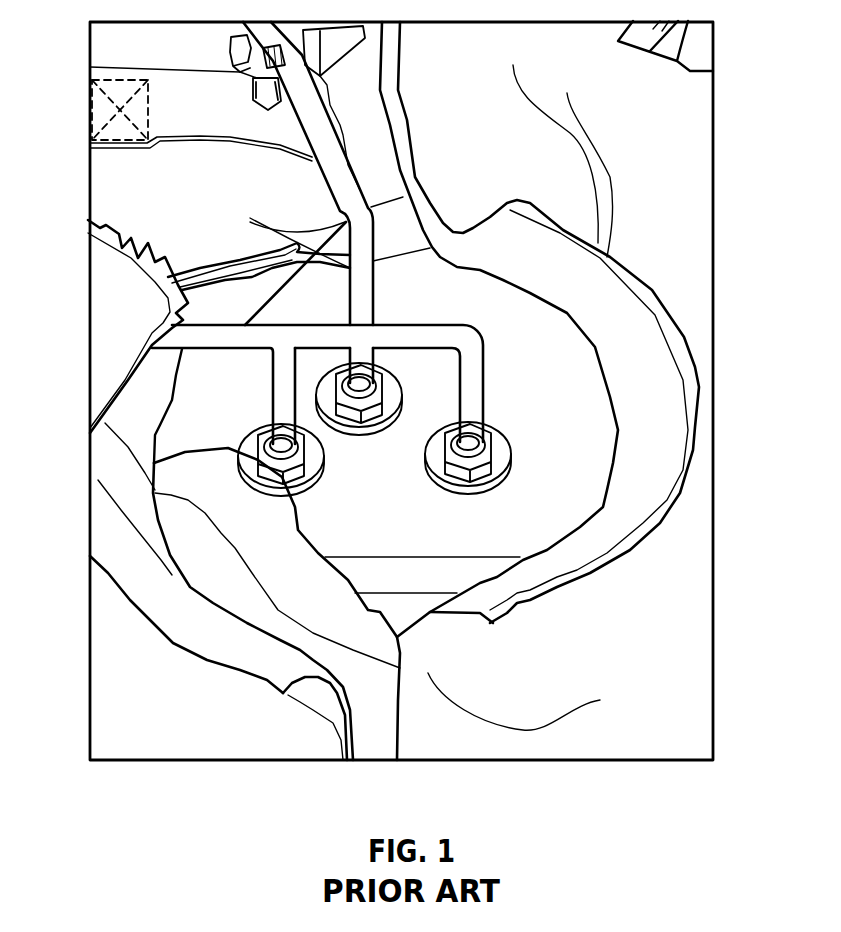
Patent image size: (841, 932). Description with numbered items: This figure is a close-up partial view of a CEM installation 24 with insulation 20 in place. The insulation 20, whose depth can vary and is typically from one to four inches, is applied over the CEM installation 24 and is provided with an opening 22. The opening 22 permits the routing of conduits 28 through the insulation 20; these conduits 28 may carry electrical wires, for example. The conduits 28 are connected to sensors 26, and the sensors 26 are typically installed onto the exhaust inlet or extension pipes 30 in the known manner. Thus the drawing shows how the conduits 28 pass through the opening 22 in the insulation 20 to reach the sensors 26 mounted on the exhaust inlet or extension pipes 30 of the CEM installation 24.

The insulation 20 is at (672, 218).
The opening 22 is at (423, 498).
The CEM installation 24 is at (714, 360).
The sensors 26 is at (385, 405).
The conduits 28 is at (283, 385).
The exhaust inlet or extension pipes 30 is at (383, 490).